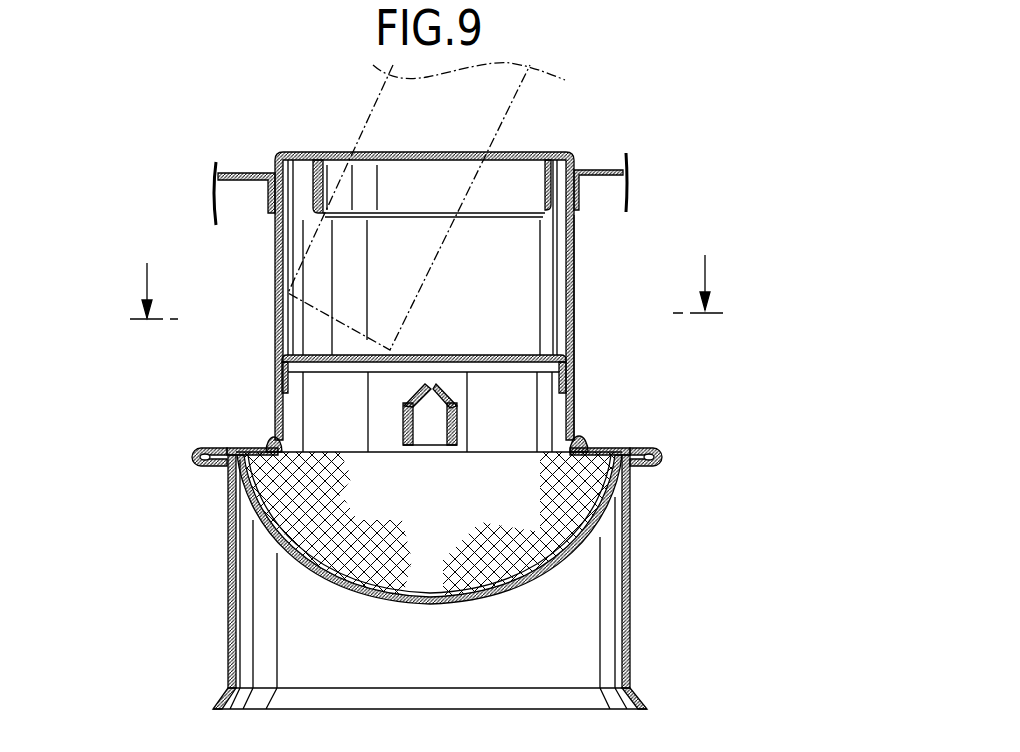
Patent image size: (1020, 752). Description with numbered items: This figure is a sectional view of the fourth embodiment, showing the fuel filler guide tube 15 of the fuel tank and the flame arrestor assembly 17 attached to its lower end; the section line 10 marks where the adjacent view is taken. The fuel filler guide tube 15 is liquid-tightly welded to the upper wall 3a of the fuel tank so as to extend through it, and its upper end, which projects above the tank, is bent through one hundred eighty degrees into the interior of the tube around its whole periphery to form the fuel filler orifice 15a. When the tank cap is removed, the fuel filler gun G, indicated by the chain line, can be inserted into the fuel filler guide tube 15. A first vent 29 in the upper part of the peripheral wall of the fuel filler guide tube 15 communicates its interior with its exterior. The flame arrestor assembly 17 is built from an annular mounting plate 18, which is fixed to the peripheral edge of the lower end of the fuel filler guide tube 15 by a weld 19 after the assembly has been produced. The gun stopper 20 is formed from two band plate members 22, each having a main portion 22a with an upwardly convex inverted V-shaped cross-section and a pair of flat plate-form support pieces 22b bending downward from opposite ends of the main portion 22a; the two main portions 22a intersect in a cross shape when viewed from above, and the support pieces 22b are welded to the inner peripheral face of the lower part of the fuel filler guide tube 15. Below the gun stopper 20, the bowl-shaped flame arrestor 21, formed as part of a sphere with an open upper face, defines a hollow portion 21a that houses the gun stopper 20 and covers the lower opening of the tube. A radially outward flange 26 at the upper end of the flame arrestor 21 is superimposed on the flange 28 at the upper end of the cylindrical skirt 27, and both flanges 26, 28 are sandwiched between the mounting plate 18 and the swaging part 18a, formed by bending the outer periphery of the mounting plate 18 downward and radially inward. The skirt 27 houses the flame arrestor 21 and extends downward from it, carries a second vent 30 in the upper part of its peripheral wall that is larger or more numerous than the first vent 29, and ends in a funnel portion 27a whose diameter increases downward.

The fuel filler gun G is at (378, 120).
The fuel filler guide tube 15 is at (575, 268).
The fuel filler orifice 15a is at (546, 183).
The first vent 29 is at (572, 234).
The upper wall 3a is at (603, 170).
The section line 10 is at (425, 286).
The weld 19 is at (272, 443).
The gun stopper 20 is at (478, 369).
The band plate member 22 is at (455, 369).
The main portion 22a is at (440, 356).
The support piece 22b is at (559, 383).
The flame arrestor assembly 17 is at (468, 565).
The mounting plate 18 is at (445, 483).
The swaging part 18a is at (212, 477).
The flange 26 is at (183, 450).
The flange 28 is at (190, 463).
The flame arrestor 21 is at (491, 536).
The hollow portion 21a is at (445, 537).
The second vent 30 is at (540, 580).
The skirt 27 is at (480, 582).
The funnel portion 27a is at (646, 692).